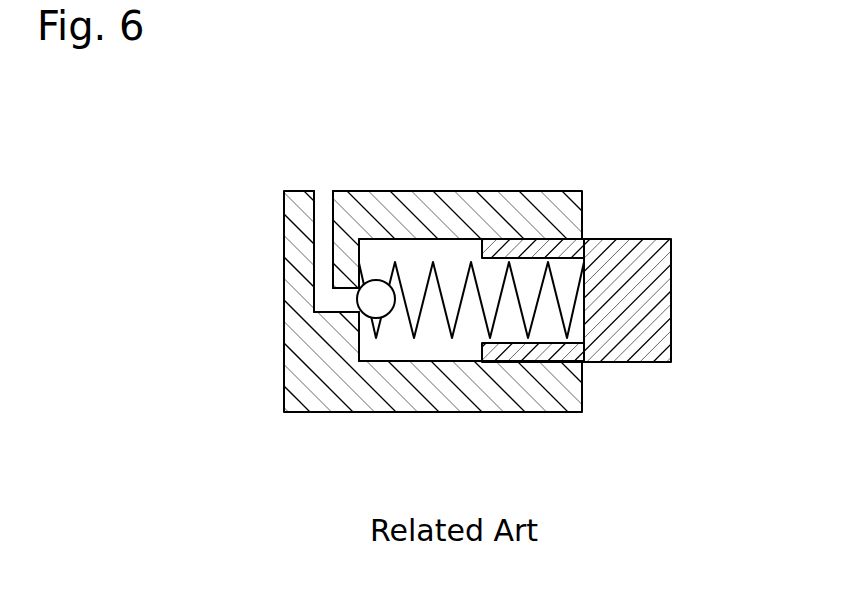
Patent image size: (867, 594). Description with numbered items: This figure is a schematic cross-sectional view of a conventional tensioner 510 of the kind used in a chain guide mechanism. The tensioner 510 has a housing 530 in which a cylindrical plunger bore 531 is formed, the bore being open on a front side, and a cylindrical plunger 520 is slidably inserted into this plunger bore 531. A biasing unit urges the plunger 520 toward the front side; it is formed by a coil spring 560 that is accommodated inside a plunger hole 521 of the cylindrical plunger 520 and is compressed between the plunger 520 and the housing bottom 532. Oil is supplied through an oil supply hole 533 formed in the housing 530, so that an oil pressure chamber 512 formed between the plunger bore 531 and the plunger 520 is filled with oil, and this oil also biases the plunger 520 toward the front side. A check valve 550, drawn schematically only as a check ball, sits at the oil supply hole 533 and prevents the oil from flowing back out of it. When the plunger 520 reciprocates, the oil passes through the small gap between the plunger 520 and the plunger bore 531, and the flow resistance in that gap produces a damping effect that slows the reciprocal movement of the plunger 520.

The tensioner 510 is at (429, 283).
The oil pressure chamber 512 is at (448, 255).
The plunger 520 is at (575, 245).
The plunger hole 521 is at (525, 263).
The housing 530 is at (426, 291).
The plunger bore 531 is at (432, 325).
The housing bottom 532 is at (337, 330).
The oil supply hole 533 is at (323, 186).
The check valve 550 is at (356, 298).
The coil spring 560 is at (528, 310).